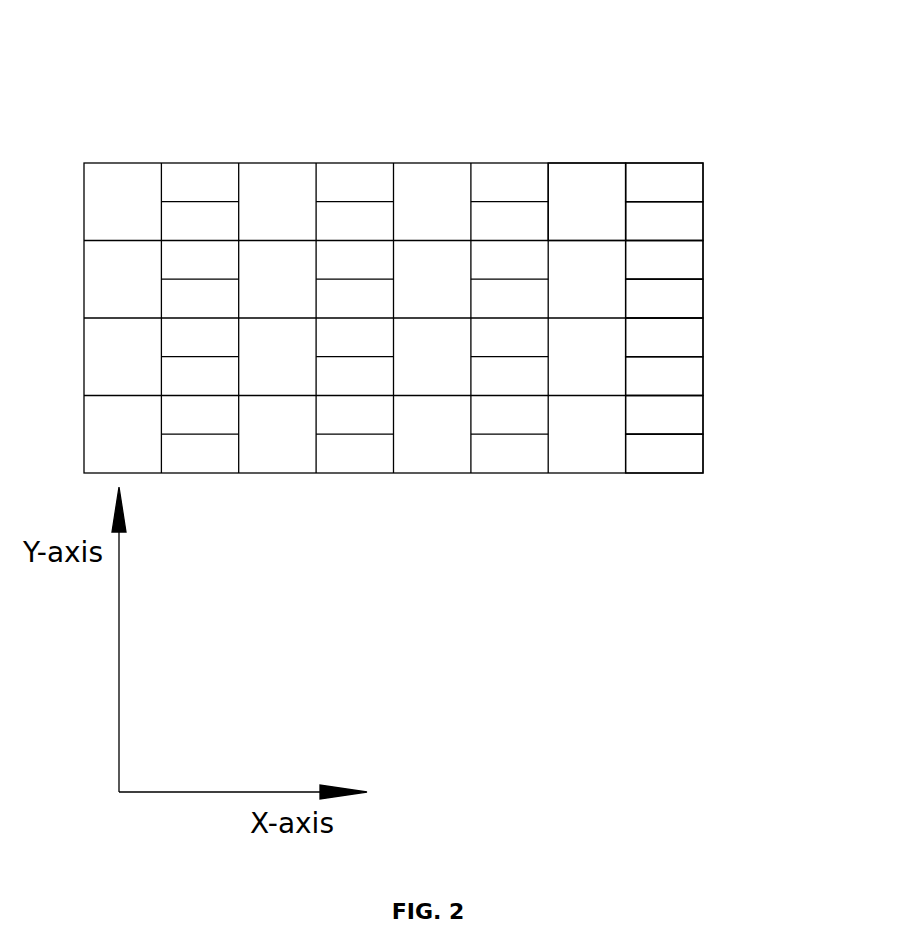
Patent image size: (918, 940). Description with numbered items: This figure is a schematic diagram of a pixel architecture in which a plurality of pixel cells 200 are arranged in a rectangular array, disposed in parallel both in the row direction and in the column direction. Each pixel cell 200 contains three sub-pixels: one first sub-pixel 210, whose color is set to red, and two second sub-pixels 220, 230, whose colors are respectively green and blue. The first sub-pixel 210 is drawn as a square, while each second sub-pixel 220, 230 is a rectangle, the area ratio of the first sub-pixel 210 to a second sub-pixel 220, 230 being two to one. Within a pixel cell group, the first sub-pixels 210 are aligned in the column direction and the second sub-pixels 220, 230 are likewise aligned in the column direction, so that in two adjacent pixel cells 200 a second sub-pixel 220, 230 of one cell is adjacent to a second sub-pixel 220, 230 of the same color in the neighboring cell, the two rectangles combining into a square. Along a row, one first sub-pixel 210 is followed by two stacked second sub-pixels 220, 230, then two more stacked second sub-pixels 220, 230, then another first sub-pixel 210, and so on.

The pixel cell 200 is at (754, 90).
The first sub-pixel 210 is at (593, 170).
The second sub-pixel 220 is at (683, 177).
The blue sub-pixel 230 is at (690, 230).